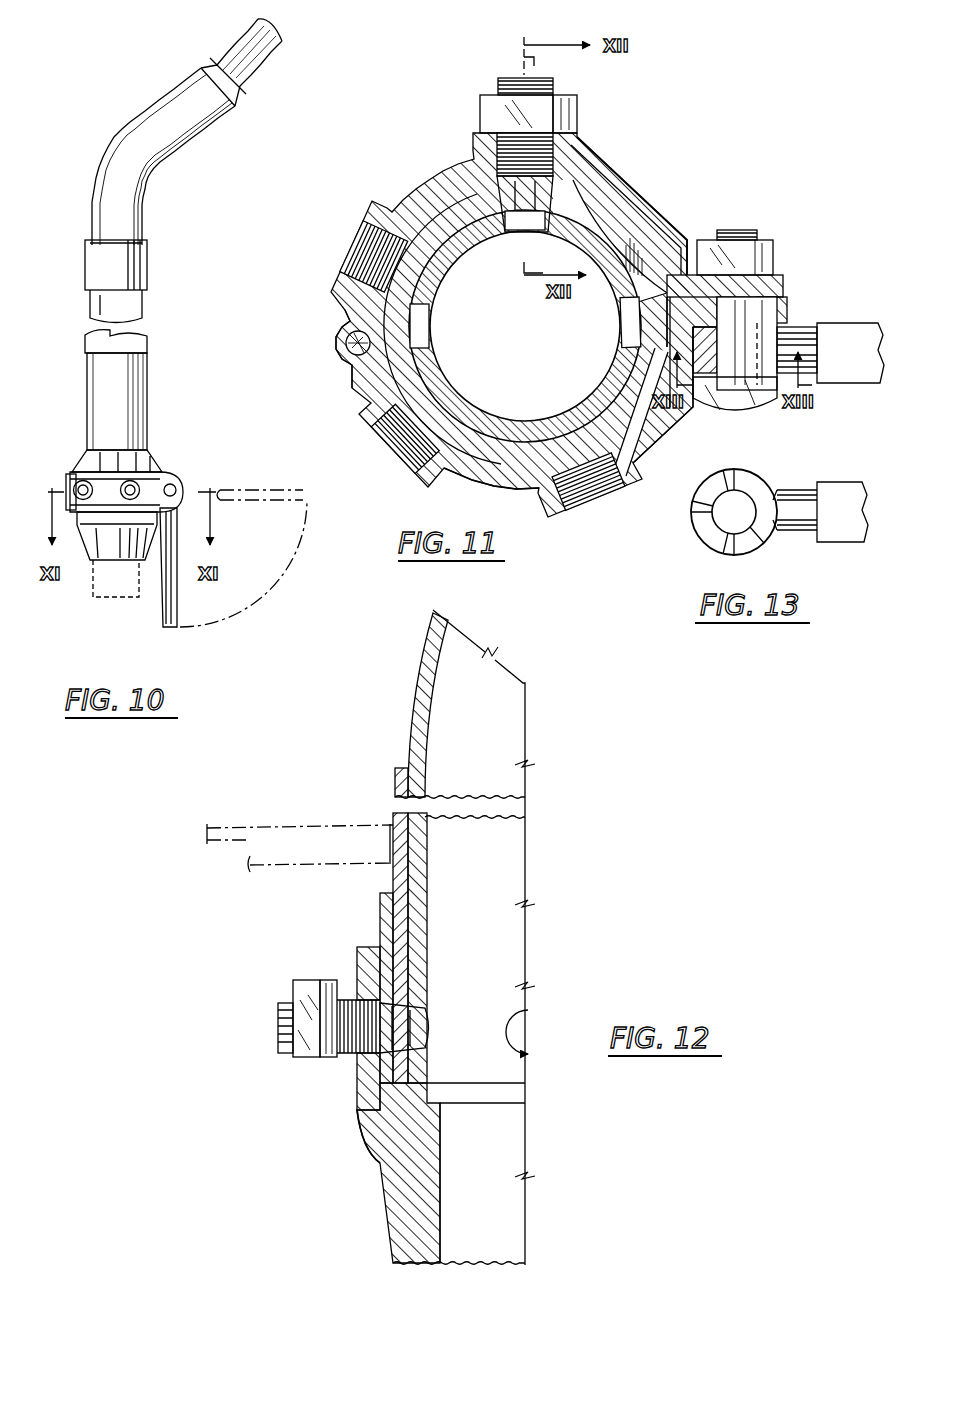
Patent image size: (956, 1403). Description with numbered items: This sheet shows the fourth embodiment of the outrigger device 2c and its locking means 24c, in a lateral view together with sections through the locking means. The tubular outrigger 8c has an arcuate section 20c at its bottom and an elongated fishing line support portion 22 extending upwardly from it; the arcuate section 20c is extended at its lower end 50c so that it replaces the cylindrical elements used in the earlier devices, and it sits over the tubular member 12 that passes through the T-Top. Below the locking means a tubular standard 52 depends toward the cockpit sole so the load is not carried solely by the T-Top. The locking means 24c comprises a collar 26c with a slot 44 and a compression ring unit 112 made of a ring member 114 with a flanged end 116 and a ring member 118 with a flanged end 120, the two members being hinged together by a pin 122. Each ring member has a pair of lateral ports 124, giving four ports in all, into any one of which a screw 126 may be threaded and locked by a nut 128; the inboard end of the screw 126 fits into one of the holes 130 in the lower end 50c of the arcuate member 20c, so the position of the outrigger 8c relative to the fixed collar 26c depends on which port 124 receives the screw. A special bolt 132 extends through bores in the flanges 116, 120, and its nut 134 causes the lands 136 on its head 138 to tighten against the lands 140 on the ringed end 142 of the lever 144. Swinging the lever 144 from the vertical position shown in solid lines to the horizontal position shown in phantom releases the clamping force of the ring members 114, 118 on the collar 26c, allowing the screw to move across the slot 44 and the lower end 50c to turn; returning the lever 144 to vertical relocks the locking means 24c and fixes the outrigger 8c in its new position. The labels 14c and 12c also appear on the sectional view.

In FIG. 10, the tubular outrigger 8c is at (232, 50).
In FIG. 10, the elongated fishing line support portion 22 is at (252, 80).
In FIG. 10, the arcuate section 20c is at (122, 201).
In FIG. 11, the arcuate section 20c is at (432, 282).
In FIG. 12, the arcuate section 20c is at (428, 708).
In FIG. 10, the tubular member 12 is at (150, 270).
In FIG. 10, the outrigger device 2c is at (150, 384).
In FIG. 10, the collar 26c is at (150, 452).
In FIG. 11, the collar 26c is at (447, 242).
In FIG. 12, the collar 26c is at (406, 1208).
In FIG. 10, the locking means 24c is at (168, 478).
In FIG. 11, the locking means 24c is at (633, 185).
In FIG. 12, the locking means 24c is at (362, 1144).
In FIG. 10, the ring member 118 is at (155, 474).
In FIG. 11, the ring member 118 is at (487, 487).
In FIG. 10, the lateral ports 124 is at (125, 486).
In FIG. 11, the lateral ports 124 is at (578, 140).
In FIG. 12, the lateral ports 124 is at (360, 970).
In FIG. 10, the tubular standard 52 is at (108, 588).
In FIG. 10, the lever 144 is at (165, 618).
In FIG. 11, the lever 144 is at (850, 383).
In FIG. 13, the lever 144 is at (850, 530).
In FIG. 11, the ring member 114 is at (443, 175).
In FIG. 12, the ring member 114 is at (357, 1095).
In FIG. 11, the screw 126 is at (553, 86).
In FIG. 12, the screw 126 is at (433, 1038).
In FIG. 11, the nut 128 is at (578, 118).
In FIG. 12, the nut 128 is at (300, 992).
In FIG. 11, the holes 130 is at (422, 322).
In FIG. 12, the holes 130 is at (512, 1013).
In FIG. 11, the slot 44 is at (630, 236).
In FIG. 11, the pin 122 is at (346, 343).
In FIG. 11, the compression ring unit 112 is at (664, 212).
In FIG. 11, the lands 136 is at (733, 382).
In FIG. 11, the flanged end 116 is at (783, 283).
In FIG. 11, the nut 134 is at (773, 254).
In FIG. 11, the special bolt 132 is at (737, 232).
In FIG. 11, the flanged end 120 is at (787, 310).
In FIG. 11, the lands 140 is at (760, 392).
In FIG. 13, the lands 140 is at (752, 492).
In FIG. 11, the head 138 is at (740, 412).
In FIG. 11, the ringed end 142 is at (800, 337).
In FIG. 13, the ringed end 142 is at (700, 538).
In FIG. 12, the ring flange 14c is at (397, 789).
In FIG. 12, the lower end 50c is at (424, 1000).
In FIG. 12, the tube end 12c is at (392, 876).